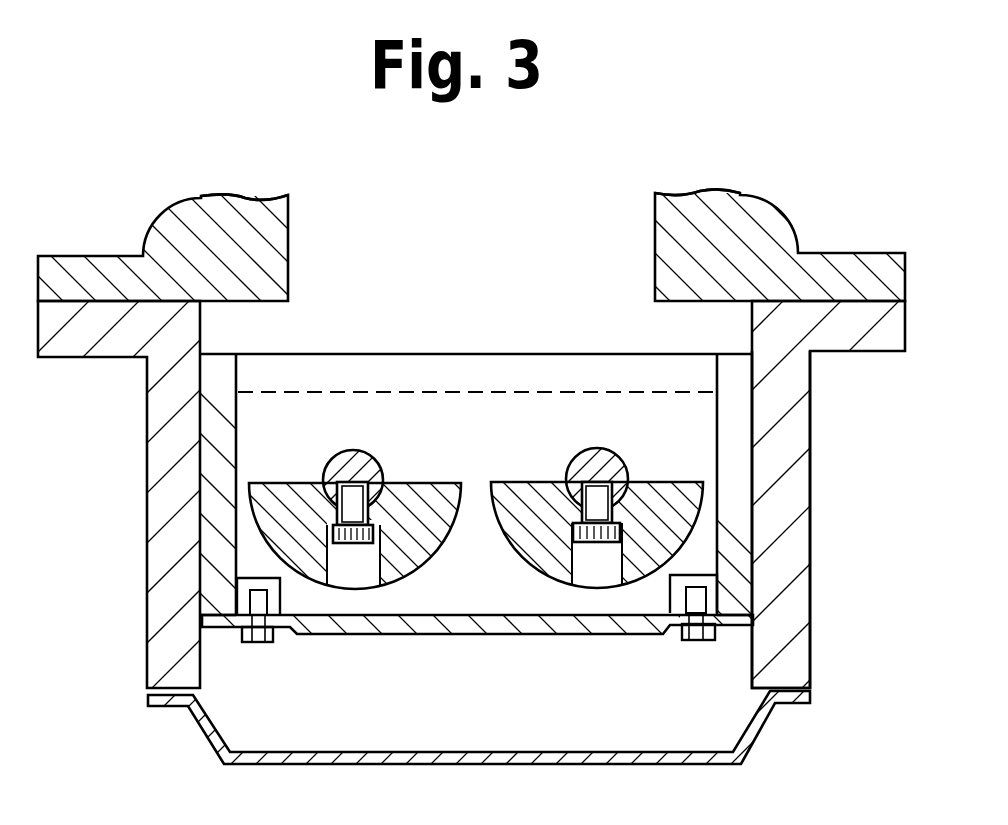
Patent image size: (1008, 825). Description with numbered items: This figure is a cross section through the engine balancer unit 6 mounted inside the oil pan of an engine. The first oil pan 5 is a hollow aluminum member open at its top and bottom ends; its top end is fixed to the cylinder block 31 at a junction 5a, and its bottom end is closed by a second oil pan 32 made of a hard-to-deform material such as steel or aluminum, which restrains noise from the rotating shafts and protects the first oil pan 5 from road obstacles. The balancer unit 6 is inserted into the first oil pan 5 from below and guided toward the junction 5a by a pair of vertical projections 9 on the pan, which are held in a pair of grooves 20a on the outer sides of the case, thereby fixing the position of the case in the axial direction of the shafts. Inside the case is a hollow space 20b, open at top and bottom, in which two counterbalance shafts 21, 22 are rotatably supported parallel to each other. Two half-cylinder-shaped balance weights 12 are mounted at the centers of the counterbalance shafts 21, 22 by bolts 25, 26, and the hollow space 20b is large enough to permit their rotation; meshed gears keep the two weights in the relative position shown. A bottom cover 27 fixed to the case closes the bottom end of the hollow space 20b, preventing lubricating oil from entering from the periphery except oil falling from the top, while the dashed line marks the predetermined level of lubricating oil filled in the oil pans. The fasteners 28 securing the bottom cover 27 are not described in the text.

The first oil pan 5 is at (852, 340).
The junction 5a is at (110, 301).
The cylinder block 31 is at (283, 262).
The balancer unit 6 is at (478, 393).
The vertical projections 9 is at (793, 512).
The grooves 20a is at (753, 455).
The hollow space 20b is at (320, 439).
The balance weights 12 is at (415, 550).
The counterbalance shaft 21 is at (368, 457).
The counterbalance shaft 22 is at (603, 458).
The bolt 25 is at (353, 545).
The bolt 26 is at (597, 545).
The bottom cover 27 is at (523, 625).
The fastening screws 28 is at (698, 642).
The second oil pan 32 is at (748, 737).